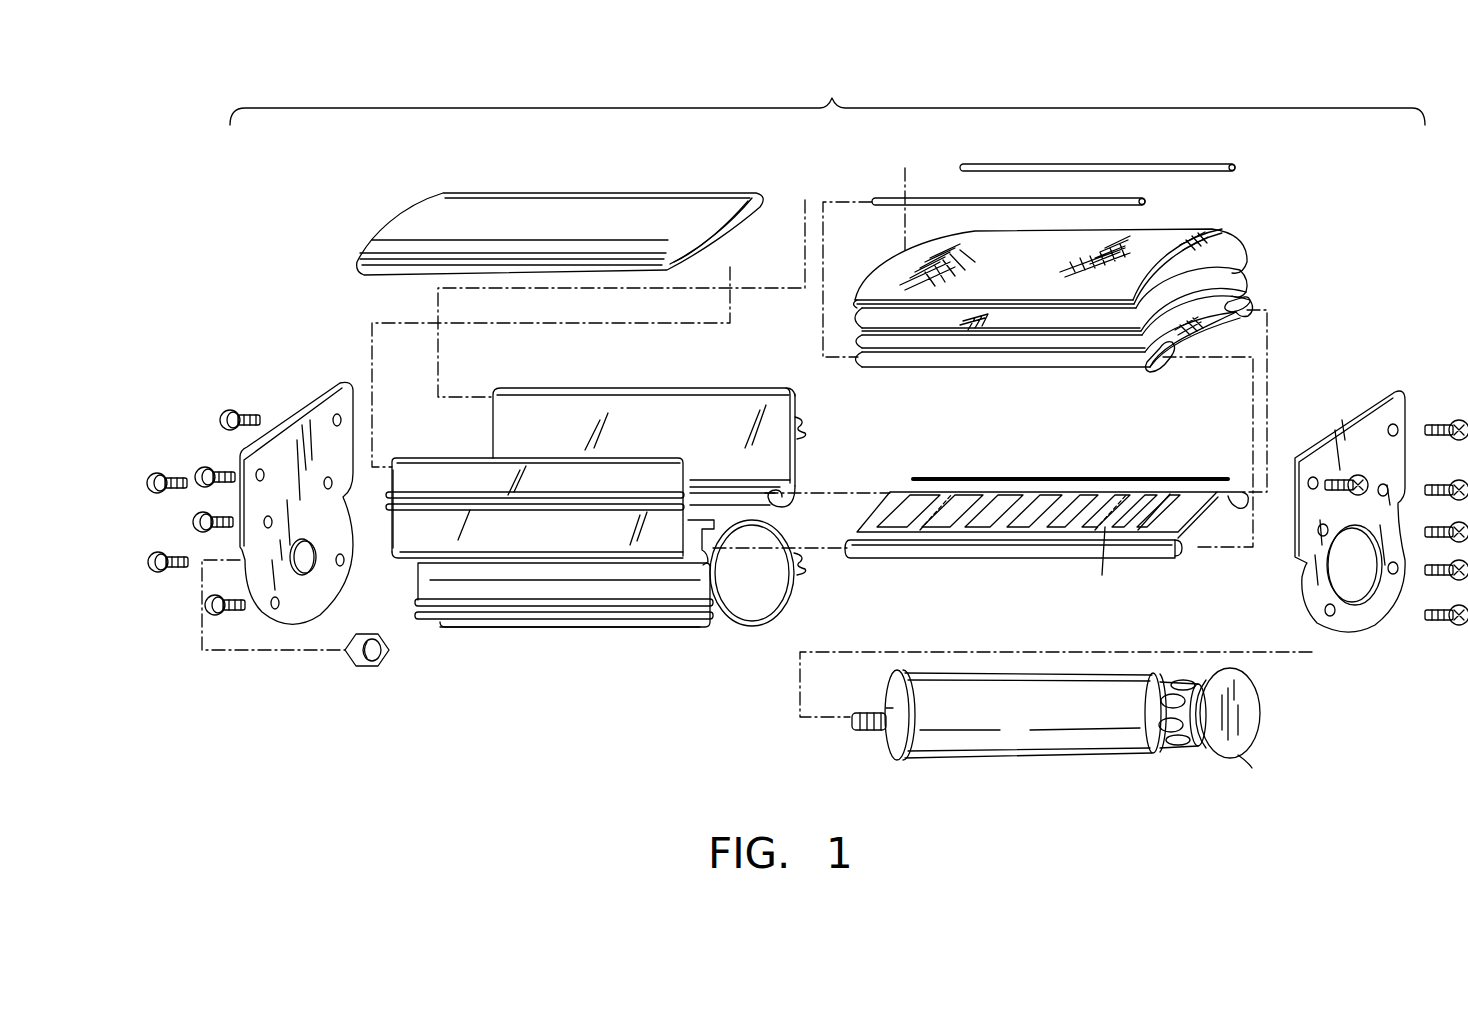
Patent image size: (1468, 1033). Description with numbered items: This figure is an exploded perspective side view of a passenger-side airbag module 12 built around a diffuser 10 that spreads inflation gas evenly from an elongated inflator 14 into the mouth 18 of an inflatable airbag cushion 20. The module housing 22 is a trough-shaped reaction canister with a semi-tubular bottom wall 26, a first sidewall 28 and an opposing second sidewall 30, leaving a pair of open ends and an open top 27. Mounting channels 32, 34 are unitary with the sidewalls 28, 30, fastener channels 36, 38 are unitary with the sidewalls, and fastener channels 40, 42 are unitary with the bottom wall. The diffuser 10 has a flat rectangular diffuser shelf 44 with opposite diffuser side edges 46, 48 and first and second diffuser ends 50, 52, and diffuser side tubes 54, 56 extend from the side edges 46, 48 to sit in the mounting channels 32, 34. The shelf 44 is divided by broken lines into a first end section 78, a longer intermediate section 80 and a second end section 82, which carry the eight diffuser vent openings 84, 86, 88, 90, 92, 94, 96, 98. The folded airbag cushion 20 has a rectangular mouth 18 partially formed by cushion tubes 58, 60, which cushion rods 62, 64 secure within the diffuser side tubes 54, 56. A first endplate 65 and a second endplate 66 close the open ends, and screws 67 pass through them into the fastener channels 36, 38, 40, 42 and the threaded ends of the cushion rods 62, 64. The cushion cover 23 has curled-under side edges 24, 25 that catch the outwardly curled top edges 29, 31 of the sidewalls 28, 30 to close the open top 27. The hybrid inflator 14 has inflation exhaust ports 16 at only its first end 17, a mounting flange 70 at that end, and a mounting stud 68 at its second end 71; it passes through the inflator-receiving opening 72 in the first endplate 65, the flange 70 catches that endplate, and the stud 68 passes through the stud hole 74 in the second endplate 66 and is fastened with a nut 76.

The diffuser 10 is at (1068, 506).
The passenger-side airbag module 12 is at (832, 98).
The elongated inflator 14 is at (1063, 713).
The inflation exhaust ports 16 is at (1170, 680).
The first end 17 is at (1258, 695).
The mouth 18 is at (1195, 328).
The inflatable airbag cushion 20 is at (1087, 300).
The module housing 22 is at (606, 517).
The cushion cover 23 is at (573, 221).
The curled-under side edge 24 is at (415, 268).
The curled-under side edge 25 is at (757, 208).
The semi-tubular bottom wall 26 is at (672, 630).
The open top 27 is at (668, 392).
The first sidewall 28 is at (392, 505).
The outwardly curled top edge 29 is at (440, 462).
The second sidewall 30 is at (796, 462).
The outwardly curled top edge 31 is at (795, 392).
The mounting channel 32 is at (708, 548).
The mounting channel 34 is at (785, 505).
The fastener channel 36 is at (632, 510).
The fastener channel 38 is at (806, 425).
The fastener channel 40 is at (605, 602).
The fastener channel 42 is at (805, 568).
The diffuser shelf 44 is at (1163, 483).
The diffuser side edge 46 is at (1103, 570).
The diffuser side edge 48 is at (1232, 490).
The first diffuser end 50 is at (1190, 525).
The second diffuser end 52 is at (890, 492).
The diffuser side tube 54 is at (985, 560).
The diffuser side tube 56 is at (1250, 508).
The cushion tube 58 is at (1152, 370).
The cushion tube 60 is at (1250, 300).
The cushion rod 62 is at (1148, 198).
The cushion rod 64 is at (1163, 165).
The first endplate 65 is at (1350, 511).
The second endplate 66 is at (310, 485).
The screws 67 is at (243, 412).
The mounting stud 68 is at (862, 730).
The mounting flange 70 is at (1257, 768).
The second end 71 is at (888, 706).
The inflator-receiving opening 72 is at (1355, 572).
The stud hole 74 is at (312, 565).
The nut 76 is at (385, 660).
The first end section 78 is at (1147, 492).
The intermediate section 80 is at (1106, 493).
The second end section 82 is at (955, 493).
The first diffuser vent opening 84 is at (1143, 530).
The second diffuser vent opening 86 is at (1120, 530).
The third diffuser vent opening 88 is at (1090, 530).
The fourth diffuser vent opening 90 is at (1056, 530).
The fifth diffuser vent opening 92 is at (1018, 530).
The sixth diffuser vent opening 94 is at (978, 530).
The seventh diffuser vent opening 96 is at (936, 530).
The eighth diffuser vent opening 98 is at (893, 530).